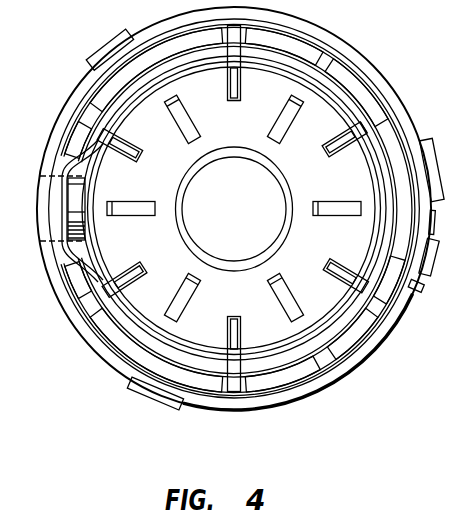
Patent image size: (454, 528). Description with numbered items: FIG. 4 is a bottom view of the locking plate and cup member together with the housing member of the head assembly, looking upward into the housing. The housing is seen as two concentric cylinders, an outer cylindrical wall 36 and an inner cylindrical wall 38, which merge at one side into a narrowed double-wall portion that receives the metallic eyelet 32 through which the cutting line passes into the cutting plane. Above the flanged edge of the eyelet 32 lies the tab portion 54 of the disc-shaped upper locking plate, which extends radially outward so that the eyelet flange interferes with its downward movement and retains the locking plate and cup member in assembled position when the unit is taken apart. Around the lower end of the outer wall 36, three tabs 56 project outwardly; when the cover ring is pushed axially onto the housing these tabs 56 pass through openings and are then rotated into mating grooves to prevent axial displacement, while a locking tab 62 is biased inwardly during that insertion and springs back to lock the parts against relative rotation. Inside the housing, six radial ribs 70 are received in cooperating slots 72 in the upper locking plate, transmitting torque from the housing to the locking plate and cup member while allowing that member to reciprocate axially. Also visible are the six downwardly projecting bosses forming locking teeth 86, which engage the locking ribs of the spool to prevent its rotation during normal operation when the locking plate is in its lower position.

The eyelet 32 is at (77, 222).
The outer cylindrical wall 36 is at (66, 188).
The inner cylindrical wall 38 is at (104, 131).
The tab portion 54 is at (101, 234).
The tabs 56 is at (258, 227).
The locking tab 62 is at (427, 267).
The ribs 70 is at (232, 209).
The slots 72 is at (298, 120).
The locking teeth 86 is at (234, 208).